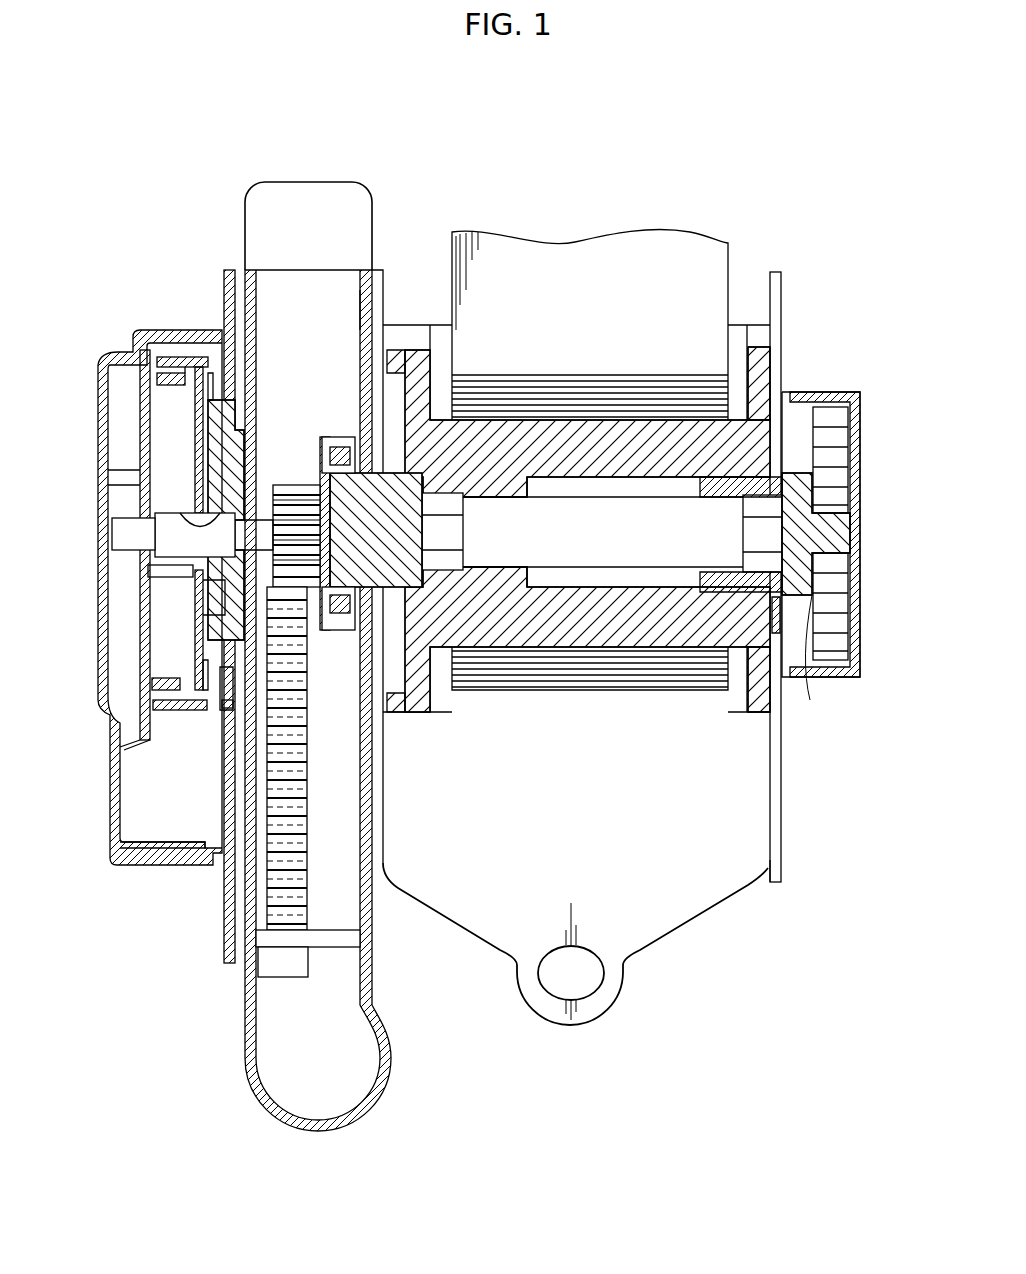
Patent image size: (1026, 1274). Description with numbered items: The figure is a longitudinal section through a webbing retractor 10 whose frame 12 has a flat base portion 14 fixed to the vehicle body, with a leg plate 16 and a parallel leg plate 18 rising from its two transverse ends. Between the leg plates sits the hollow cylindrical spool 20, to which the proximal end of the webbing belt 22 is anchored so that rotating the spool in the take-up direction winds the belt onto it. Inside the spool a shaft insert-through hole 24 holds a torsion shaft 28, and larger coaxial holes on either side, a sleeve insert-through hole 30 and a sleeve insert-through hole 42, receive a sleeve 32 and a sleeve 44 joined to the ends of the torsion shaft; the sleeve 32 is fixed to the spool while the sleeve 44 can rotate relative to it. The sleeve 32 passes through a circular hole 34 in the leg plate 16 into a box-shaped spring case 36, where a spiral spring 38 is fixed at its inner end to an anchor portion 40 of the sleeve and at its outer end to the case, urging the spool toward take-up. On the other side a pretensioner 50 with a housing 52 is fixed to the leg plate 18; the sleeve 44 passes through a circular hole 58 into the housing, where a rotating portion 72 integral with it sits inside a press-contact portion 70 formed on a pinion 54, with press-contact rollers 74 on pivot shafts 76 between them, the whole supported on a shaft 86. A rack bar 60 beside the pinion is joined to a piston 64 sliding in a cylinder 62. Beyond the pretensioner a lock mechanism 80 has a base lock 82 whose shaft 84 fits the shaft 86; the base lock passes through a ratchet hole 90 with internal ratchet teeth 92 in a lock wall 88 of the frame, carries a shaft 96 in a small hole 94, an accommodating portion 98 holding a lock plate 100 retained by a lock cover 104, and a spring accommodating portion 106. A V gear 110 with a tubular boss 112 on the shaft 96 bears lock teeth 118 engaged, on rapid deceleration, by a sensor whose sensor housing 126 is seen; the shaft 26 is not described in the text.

The power window regulator 10 is at (771, 202).
The mounting plate 12 is at (785, 313).
The bracket 14 is at (718, 880).
The plate lower portion 16 is at (781, 852).
The side plate 18 is at (383, 808).
The motor 20 is at (660, 560).
The motor housing 22 is at (660, 240).
The coil 24 is at (570, 567).
The armature shaft 26 is at (603, 532).
The rotor core 28 is at (690, 562).
The armature 30 is at (710, 650).
The end bracket 32 is at (745, 450).
The bearing support 34 is at (795, 640).
The brush holder cover 36 is at (858, 462).
The brush 38 is at (835, 628).
The bearing 40 is at (835, 535).
The rotor 42 is at (488, 600).
The yoke 44 is at (435, 670).
The tubular housing 50 is at (396, 241).
The housing wall 52 is at (370, 300).
The pinion gear 54 is at (296, 485).
The flange 58 is at (395, 703).
The worm shaft 60 is at (307, 850).
The cross bar 62 is at (364, 922).
The shaft end 64 is at (325, 942).
The hub 70 is at (328, 455).
The bearing retainer 72 is at (330, 640).
The bearing 74 is at (342, 440).
The bearing ring 76 is at (336, 452).
The cover assembly 80 is at (170, 302).
The lower terminal 82 is at (210, 660).
The bearing boss 84 is at (262, 502).
The contact 86 is at (222, 605).
The support plate 88 is at (224, 922).
The lower contact 90 is at (185, 705).
The housing 92 is at (150, 645).
The knob body 94 is at (184, 520).
The spring 96 is at (178, 560).
The upper terminal 98 is at (195, 435).
The switch 100 is at (150, 445).
The holder 104 is at (216, 715).
The switch housing 106 is at (142, 620).
The contact plate 110 is at (135, 472).
The knob 112 is at (120, 570).
The upper contact 118 is at (184, 352).
The lip 126 is at (178, 848).